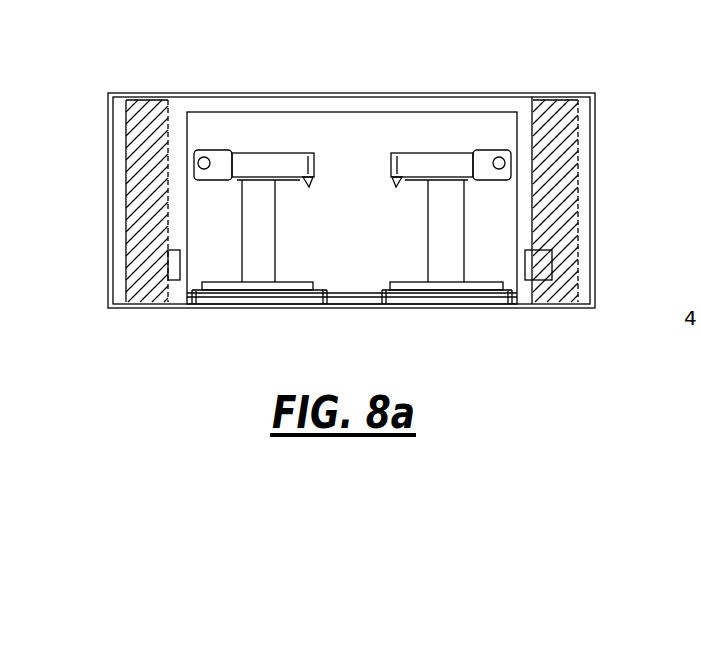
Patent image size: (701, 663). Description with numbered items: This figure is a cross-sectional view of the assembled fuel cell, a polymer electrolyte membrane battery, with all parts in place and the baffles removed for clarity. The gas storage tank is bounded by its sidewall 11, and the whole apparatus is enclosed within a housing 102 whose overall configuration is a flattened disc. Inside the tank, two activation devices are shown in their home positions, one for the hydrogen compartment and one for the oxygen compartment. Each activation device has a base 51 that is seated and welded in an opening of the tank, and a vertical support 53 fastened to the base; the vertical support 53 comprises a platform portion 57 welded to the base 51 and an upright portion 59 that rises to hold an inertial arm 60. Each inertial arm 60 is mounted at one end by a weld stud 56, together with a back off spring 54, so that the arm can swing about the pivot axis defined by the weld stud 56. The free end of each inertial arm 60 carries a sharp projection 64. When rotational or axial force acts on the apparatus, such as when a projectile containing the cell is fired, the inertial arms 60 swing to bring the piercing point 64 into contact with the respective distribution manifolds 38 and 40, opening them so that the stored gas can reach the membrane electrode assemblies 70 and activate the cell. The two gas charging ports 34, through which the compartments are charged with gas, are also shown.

The circular sidewall 11 is at (527, 135).
The gas charging ports 34 is at (252, 304).
The distribution manifold 38 is at (177, 267).
The distribution manifold 40 is at (546, 272).
The base 51 is at (398, 288).
The vertical support 53 is at (427, 233).
The back off spring 54 is at (226, 150).
The weld stud 56 is at (204, 156).
The platform portion 57 is at (220, 284).
The upright portion 59 is at (255, 212).
The inertial arm 60 is at (417, 160).
The projection 64 is at (312, 182).
The membrane electrode assemblies 70 is at (573, 138).
The housing 102 is at (595, 265).